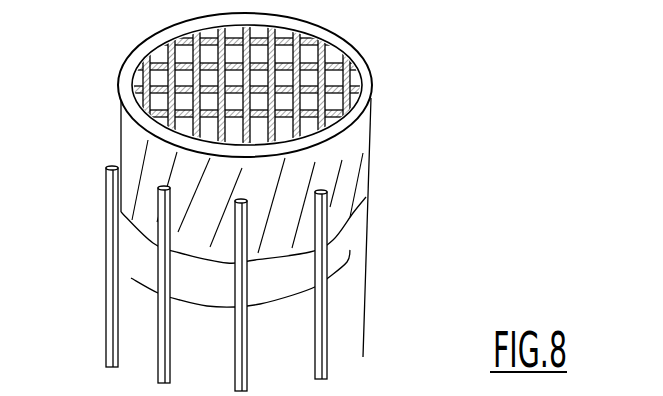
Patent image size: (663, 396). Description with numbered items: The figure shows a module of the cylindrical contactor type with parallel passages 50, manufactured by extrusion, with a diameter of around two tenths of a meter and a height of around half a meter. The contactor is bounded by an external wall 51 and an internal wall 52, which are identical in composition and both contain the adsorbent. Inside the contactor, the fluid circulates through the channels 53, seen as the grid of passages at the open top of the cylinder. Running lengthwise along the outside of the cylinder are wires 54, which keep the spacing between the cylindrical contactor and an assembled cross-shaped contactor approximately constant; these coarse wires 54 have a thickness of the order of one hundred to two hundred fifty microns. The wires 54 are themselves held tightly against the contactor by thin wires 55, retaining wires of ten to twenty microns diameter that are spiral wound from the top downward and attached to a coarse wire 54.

The cylindrical contactor module with parallel passages 50 is at (343, 183).
The external wall 51 is at (363, 95).
The internal wall 52 is at (145, 105).
The channels 53 is at (310, 77).
The wires 54 is at (322, 261).
The thin wires 55 is at (293, 296).